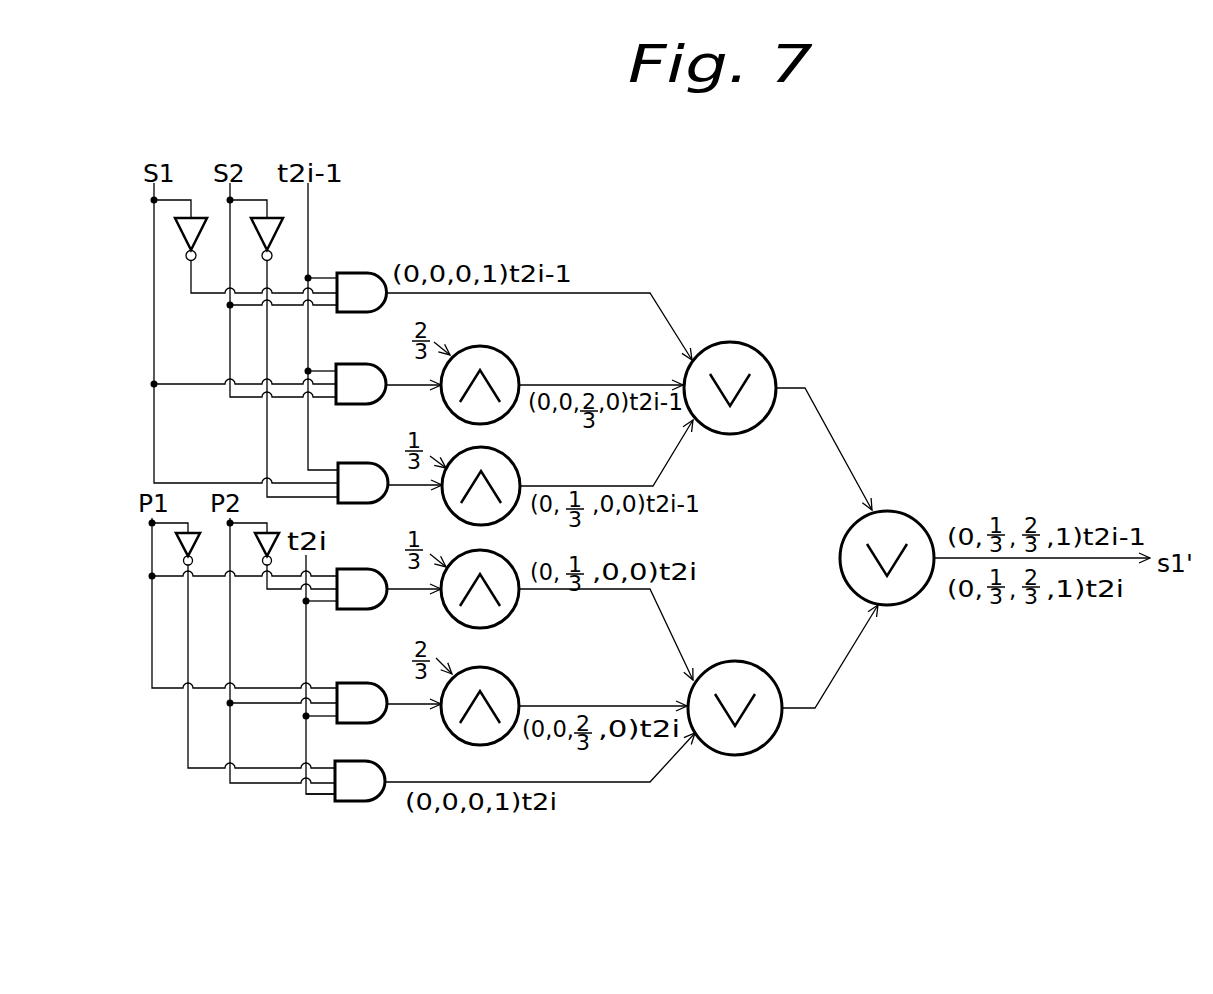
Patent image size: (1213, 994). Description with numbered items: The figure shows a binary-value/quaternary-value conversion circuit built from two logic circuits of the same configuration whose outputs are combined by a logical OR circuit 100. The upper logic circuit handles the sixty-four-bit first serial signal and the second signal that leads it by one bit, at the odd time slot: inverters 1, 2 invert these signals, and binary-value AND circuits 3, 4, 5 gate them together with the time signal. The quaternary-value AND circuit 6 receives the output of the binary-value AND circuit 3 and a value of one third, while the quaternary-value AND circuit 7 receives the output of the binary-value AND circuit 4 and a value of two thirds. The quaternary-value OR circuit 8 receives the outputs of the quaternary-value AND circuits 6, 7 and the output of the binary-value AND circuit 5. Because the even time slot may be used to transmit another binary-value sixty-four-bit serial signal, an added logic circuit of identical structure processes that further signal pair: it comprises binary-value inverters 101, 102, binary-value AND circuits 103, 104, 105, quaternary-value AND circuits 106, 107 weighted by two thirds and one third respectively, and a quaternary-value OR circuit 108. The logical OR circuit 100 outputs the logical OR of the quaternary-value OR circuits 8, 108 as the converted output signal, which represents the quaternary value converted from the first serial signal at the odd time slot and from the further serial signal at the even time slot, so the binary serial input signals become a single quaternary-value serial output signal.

The inverter 1 is at (190, 222).
The inverter 2 is at (270, 222).
The binary-value AND circuit 3 is at (357, 473).
The binary-value AND circuit 4 is at (357, 373).
The binary-value AND circuit 5 is at (359, 277).
The quaternary-value AND circuit 6 is at (508, 478).
The quaternary-value AND circuit 7 is at (507, 365).
The quaternary-value OR circuit 8 is at (732, 350).
The logical OR circuit 100 is at (893, 515).
The binary-value inverter 101 is at (180, 543).
The binary-value inverter 102 is at (265, 547).
The binary-value AND circuit 103 is at (378, 778).
The binary-value AND circuit 104 is at (352, 691).
The binary-value AND circuit 105 is at (357, 575).
The quaternary-value AND circuit 106 is at (508, 688).
The quaternary-value AND circuit 107 is at (510, 608).
The quaternary-value OR circuit 108 is at (740, 672).